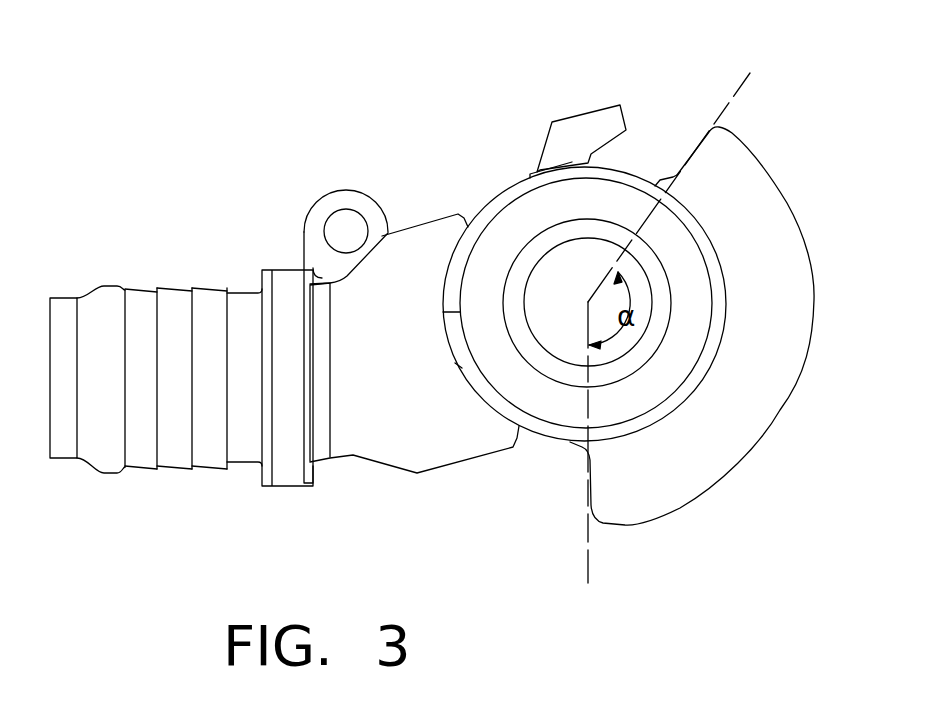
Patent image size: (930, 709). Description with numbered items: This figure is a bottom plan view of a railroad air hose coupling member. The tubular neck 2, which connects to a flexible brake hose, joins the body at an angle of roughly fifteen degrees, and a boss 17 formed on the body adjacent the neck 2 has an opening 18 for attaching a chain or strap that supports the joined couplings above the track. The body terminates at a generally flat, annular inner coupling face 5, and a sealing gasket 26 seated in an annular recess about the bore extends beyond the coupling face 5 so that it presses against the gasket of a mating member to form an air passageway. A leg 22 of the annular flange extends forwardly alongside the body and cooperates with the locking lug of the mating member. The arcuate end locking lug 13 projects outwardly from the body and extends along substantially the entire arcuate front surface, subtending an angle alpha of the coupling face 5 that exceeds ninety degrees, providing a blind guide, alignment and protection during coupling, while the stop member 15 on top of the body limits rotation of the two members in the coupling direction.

The tubular neck 2 is at (140, 455).
The inner coupling face 5 is at (548, 402).
The end locking lug 13 is at (740, 207).
The stop member 15 is at (573, 128).
The boss 17 is at (320, 212).
The opening 18 is at (345, 212).
The leg 22 is at (437, 445).
The sealing gasket 26 is at (532, 247).